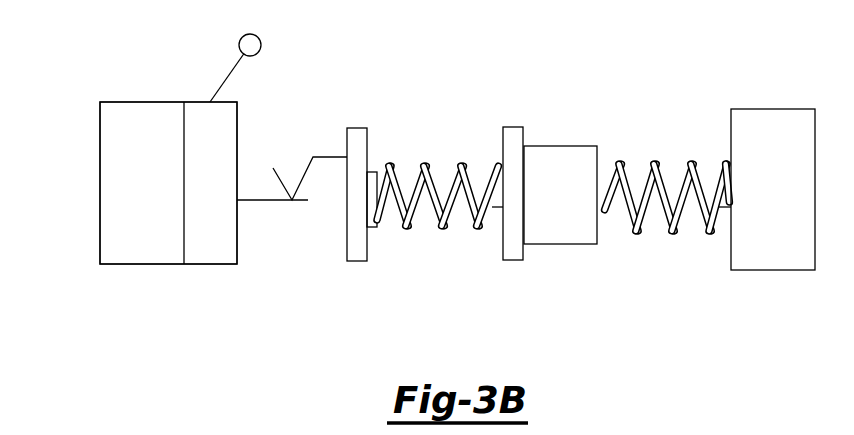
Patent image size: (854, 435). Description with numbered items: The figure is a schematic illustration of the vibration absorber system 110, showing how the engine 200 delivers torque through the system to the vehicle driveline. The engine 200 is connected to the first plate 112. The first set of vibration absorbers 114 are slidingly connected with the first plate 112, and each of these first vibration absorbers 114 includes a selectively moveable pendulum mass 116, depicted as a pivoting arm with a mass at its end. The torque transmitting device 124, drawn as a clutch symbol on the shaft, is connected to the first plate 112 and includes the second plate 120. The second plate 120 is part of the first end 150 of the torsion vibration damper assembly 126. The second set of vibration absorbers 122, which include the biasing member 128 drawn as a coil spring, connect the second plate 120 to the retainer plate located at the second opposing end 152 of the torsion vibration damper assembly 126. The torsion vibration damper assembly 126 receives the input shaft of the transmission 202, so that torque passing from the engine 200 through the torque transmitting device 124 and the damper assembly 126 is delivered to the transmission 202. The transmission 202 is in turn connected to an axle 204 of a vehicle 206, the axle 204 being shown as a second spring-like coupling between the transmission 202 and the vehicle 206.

The torsional vibration damper assembly 110 is at (470, 78).
The first plate 112 is at (213, 264).
The first set of vibration absorbers 114 is at (223, 78).
The pendulum mass 116 is at (262, 47).
The second plate 120 is at (347, 240).
The second set of vibration absorbers 122 is at (437, 151).
The torque transmitting device 124 is at (282, 138).
The torsion vibration damper assembly 126 is at (447, 243).
The biasing member 128 is at (395, 216).
The first end 150 is at (373, 155).
The second opposing end 152 is at (514, 118).
The engine 200 is at (96, 182).
The transmission 202 is at (560, 146).
The axle 204 is at (681, 176).
The vehicle 206 is at (773, 109).